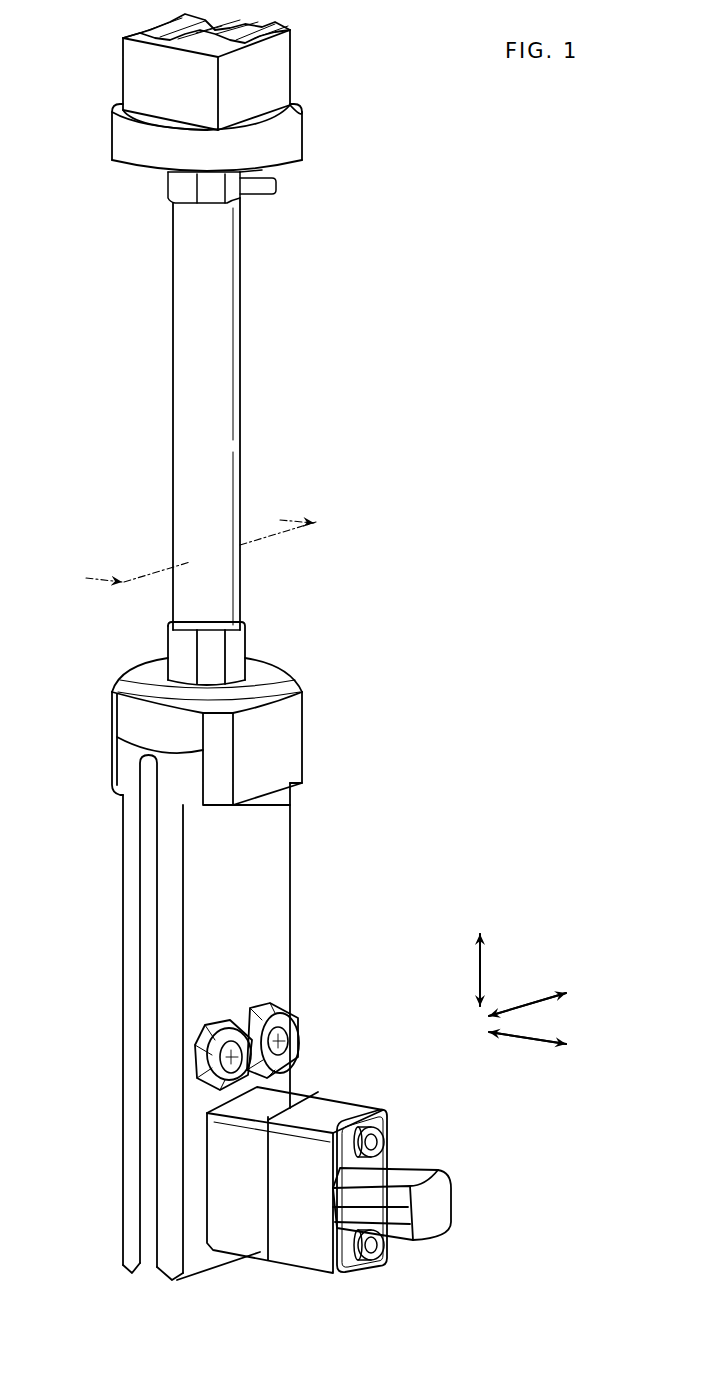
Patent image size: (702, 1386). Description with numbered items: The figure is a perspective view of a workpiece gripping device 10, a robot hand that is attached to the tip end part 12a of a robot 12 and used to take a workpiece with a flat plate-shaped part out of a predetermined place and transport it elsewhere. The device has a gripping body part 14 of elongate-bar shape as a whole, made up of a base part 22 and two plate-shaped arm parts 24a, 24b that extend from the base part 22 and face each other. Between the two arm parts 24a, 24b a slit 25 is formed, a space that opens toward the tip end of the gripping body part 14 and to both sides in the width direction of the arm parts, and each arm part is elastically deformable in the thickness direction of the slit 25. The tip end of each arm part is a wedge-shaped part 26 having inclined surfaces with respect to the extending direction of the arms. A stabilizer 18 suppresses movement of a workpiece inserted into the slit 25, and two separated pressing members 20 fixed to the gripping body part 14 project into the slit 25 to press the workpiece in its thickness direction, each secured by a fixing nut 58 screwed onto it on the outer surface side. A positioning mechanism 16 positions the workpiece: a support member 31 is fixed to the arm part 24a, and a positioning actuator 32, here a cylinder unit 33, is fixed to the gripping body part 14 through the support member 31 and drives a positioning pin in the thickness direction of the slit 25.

The workpiece gripping device 10 is at (92, 650).
The robot 12 is at (122, 57).
The tip end part 12a is at (278, 80).
The gripping body part 14 is at (276, 826).
The positioning mechanism 16 is at (387, 1113).
The stabilizer 18 is at (254, 278).
The pressing member 20 is at (235, 1058).
The base part 22 is at (128, 713).
The arm part 24a is at (283, 871).
The arm part 24b is at (131, 893).
The slit 25 is at (148, 950).
The wedge-shaped part 26 is at (177, 1280).
The support member 31 is at (303, 1253).
The positioning actuator 32 is at (455, 1193).
The cylinder unit 33 is at (392, 1204).
The fixing nut 58 is at (262, 1005).